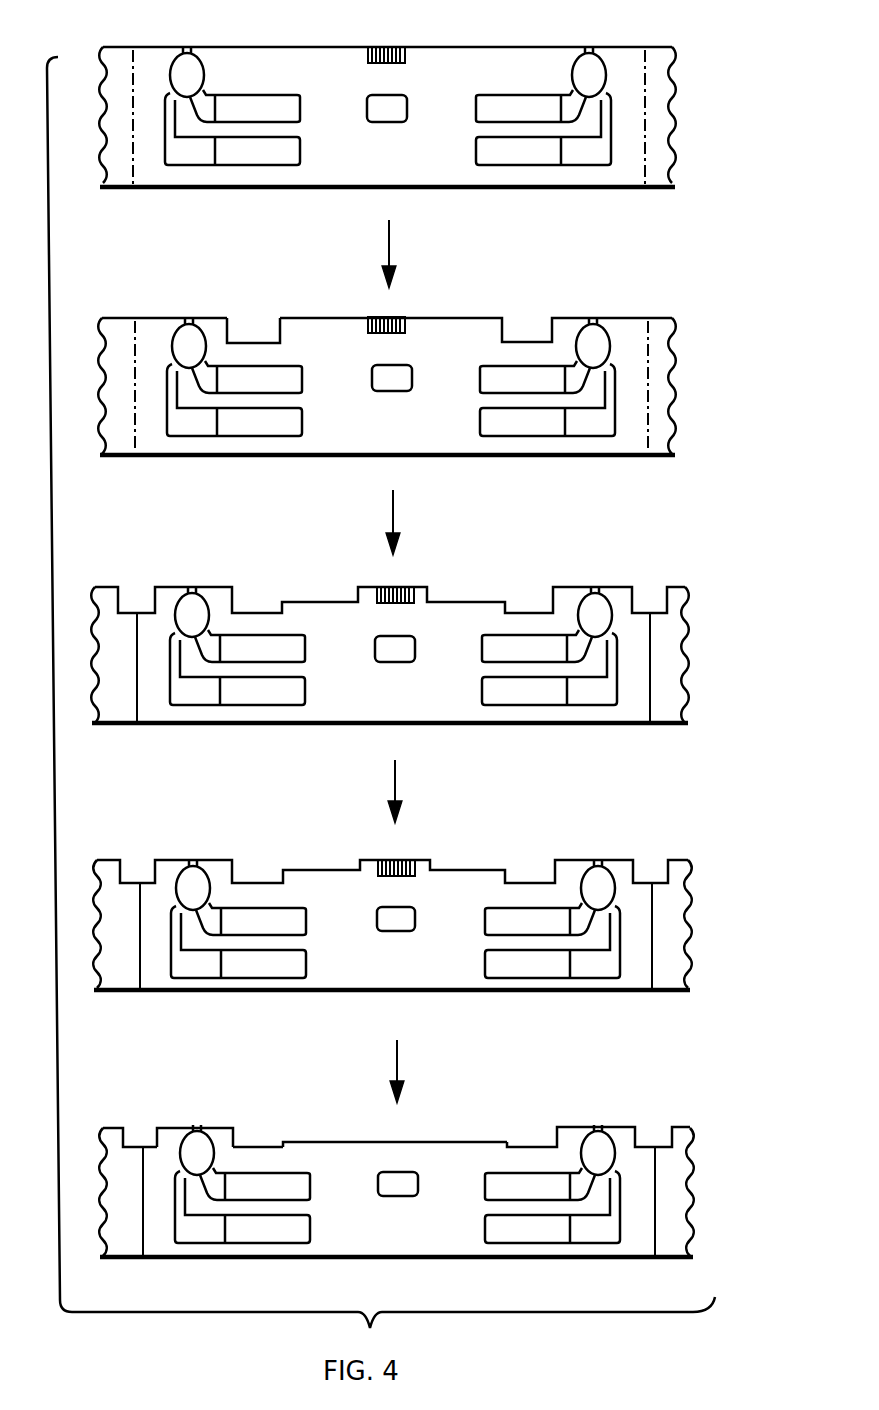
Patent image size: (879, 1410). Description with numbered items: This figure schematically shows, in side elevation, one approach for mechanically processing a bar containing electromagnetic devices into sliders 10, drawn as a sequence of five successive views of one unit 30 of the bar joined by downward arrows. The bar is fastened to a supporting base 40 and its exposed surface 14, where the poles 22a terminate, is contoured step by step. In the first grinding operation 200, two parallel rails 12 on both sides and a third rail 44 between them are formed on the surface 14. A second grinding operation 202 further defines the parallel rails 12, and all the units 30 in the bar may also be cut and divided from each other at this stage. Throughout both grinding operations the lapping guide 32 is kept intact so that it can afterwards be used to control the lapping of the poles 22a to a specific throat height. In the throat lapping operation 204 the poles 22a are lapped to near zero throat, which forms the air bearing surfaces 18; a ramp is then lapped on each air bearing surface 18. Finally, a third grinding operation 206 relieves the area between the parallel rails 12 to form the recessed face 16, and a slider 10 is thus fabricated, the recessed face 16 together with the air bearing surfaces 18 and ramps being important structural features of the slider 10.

The slider 10 is at (285, 1108).
The parallel rails 12 is at (565, 47).
The exposed surface 14 is at (298, 47).
The recessed face 16 is at (458, 1142).
The air bearing surfaces 18 is at (173, 1128).
The poles 22a is at (598, 49).
The unit 30 is at (226, 17).
The lapping guide 32 is at (405, 58).
The base plate / substrate 40 is at (423, 170).
The third rail 44 is at (307, 322).
The first grinding step 200 is at (389, 252).
The second grinding step 202 is at (395, 522).
The throat lapping step 204 is at (395, 788).
The third grinding step 206 is at (397, 1062).